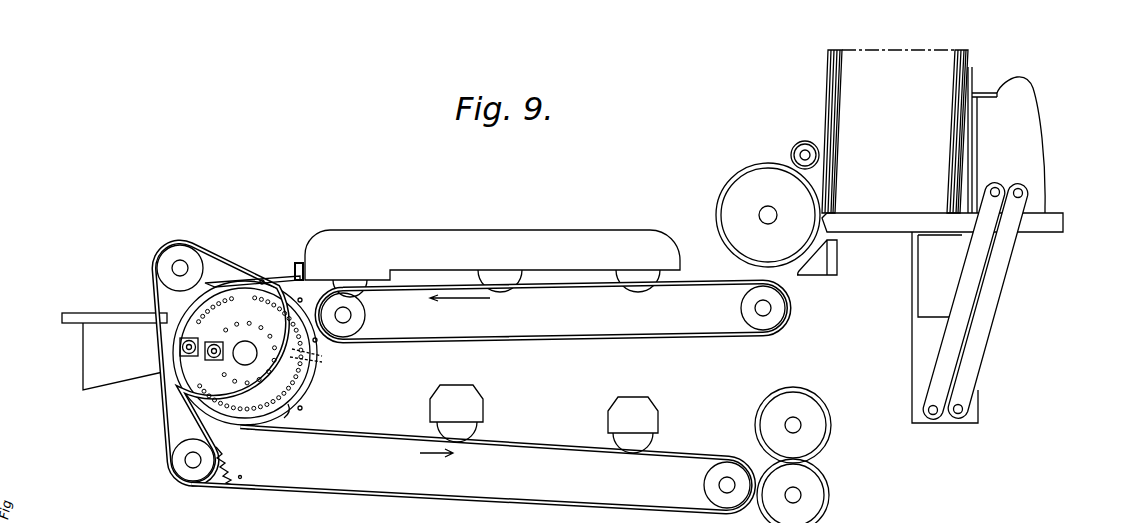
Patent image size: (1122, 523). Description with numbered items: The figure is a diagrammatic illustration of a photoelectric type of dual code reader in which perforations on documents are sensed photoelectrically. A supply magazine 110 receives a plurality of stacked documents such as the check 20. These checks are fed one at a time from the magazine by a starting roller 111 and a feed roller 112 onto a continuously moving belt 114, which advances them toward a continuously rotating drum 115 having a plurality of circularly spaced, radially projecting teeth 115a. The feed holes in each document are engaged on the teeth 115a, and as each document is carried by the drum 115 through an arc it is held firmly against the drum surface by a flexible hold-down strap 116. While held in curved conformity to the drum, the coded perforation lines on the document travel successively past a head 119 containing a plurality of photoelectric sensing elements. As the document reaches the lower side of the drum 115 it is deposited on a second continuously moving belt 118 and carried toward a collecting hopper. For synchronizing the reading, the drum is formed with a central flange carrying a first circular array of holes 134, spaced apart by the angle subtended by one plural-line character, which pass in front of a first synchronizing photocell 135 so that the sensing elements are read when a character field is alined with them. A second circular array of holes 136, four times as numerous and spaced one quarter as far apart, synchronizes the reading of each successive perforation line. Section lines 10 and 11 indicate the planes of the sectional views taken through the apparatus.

The section line 10- 10 is at (177, 222).
The section line 11- 11 is at (72, 360).
The check 20 is at (827, 67).
The supply magazine 110 is at (991, 73).
The starting roller 111 is at (795, 143).
The feed roller 112 is at (717, 212).
The belt 114 is at (680, 287).
The drum 115 is at (313, 388).
The teeth 115a is at (290, 411).
The hold-down strap 116 is at (262, 277).
The second belt 118 is at (543, 445).
The head 119 is at (100, 378).
The holes 134 is at (238, 320).
The first synchronizing photocell 135 is at (206, 354).
The holes 136 is at (180, 345).